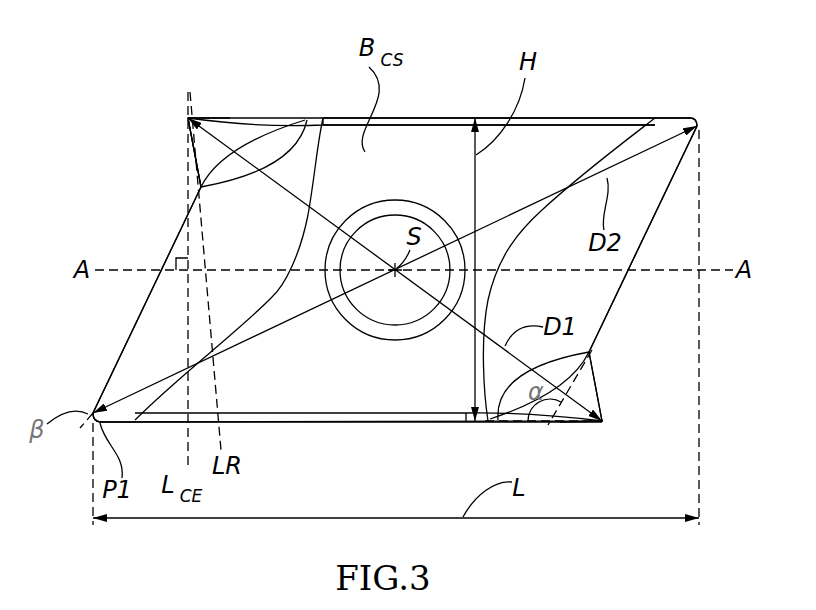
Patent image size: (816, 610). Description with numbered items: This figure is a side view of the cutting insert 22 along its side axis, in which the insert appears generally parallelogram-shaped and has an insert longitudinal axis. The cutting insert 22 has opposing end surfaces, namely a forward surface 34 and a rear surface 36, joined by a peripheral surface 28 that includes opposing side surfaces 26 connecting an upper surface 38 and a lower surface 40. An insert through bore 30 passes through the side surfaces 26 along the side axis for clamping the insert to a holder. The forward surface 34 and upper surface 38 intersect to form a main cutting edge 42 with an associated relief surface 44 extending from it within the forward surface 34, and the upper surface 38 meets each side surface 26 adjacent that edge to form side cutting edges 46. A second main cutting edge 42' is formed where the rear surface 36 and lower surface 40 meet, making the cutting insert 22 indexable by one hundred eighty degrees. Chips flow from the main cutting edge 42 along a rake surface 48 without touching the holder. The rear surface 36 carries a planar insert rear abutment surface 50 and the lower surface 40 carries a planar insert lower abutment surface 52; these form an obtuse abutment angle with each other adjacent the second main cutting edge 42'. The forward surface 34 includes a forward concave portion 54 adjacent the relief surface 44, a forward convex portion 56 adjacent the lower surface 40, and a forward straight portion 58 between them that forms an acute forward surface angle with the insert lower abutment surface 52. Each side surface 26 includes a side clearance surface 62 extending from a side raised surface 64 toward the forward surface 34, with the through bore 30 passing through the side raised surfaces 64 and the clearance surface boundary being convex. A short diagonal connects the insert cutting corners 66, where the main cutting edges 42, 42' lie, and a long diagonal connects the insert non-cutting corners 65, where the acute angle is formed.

The cutting insert 22 is at (645, 90).
The side surfaces 26 is at (415, 118).
The peripheral surface 28 is at (563, 116).
The insert through bore 30 is at (478, 163).
The forward surface 34 is at (114, 363).
The rear surface 36 is at (607, 308).
The upper surface 38 is at (607, 117).
The lower surface 40 is at (414, 423).
The main cutting edge 42 is at (164, 120).
The second main cutting edge 42' is at (579, 433).
The relief surface 44 is at (193, 165).
The side cutting edges 46 is at (213, 117).
The rake surface 48 is at (250, 112).
The insert rear abutment surface 50 is at (647, 228).
The insert lower abutment surface 52 is at (369, 423).
The forward concave portion 54 is at (323, 118).
The forward convex portion 56 is at (93, 408).
The forward straight portion 58 is at (172, 256).
The side clearance surface 62 is at (134, 357).
The side raised surface 64 is at (412, 138).
The insert non-cutting corners 65 is at (700, 110).
The insert cutting corners 66 is at (173, 97).